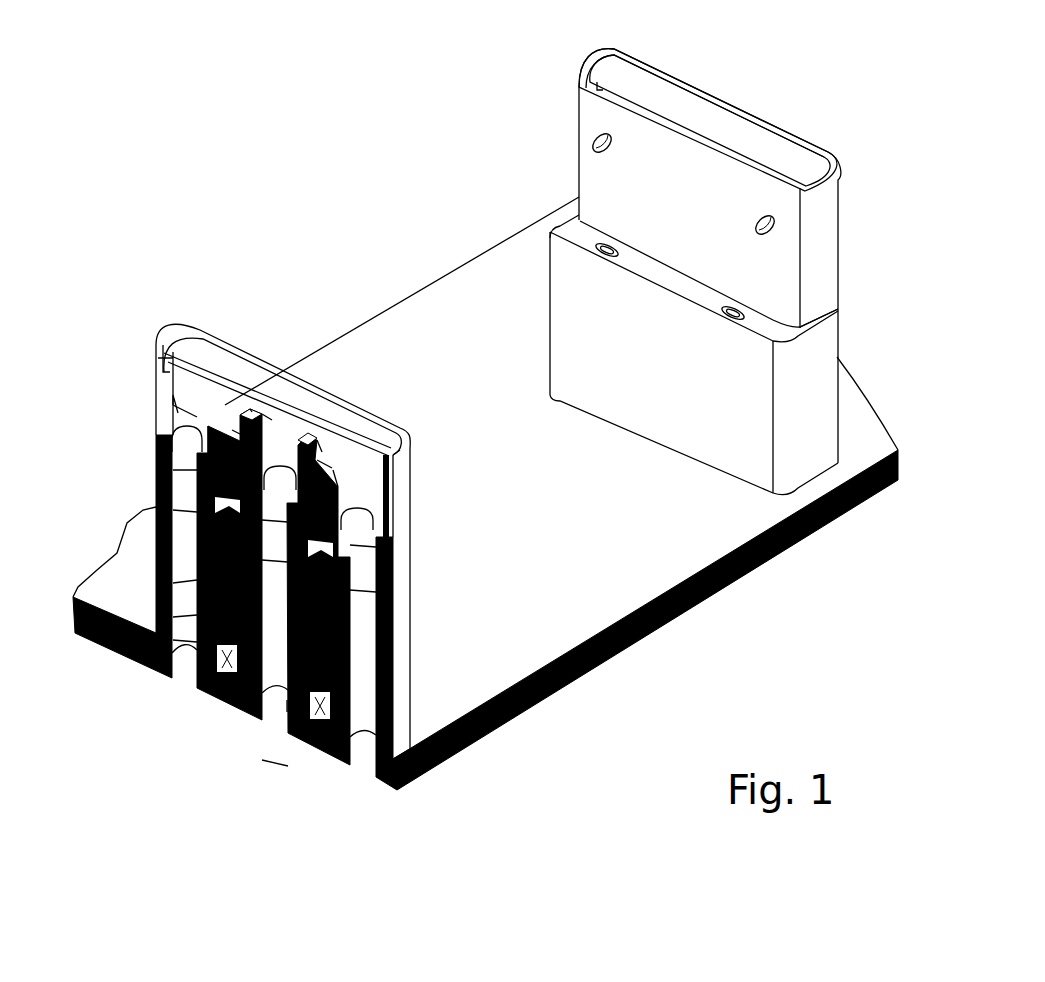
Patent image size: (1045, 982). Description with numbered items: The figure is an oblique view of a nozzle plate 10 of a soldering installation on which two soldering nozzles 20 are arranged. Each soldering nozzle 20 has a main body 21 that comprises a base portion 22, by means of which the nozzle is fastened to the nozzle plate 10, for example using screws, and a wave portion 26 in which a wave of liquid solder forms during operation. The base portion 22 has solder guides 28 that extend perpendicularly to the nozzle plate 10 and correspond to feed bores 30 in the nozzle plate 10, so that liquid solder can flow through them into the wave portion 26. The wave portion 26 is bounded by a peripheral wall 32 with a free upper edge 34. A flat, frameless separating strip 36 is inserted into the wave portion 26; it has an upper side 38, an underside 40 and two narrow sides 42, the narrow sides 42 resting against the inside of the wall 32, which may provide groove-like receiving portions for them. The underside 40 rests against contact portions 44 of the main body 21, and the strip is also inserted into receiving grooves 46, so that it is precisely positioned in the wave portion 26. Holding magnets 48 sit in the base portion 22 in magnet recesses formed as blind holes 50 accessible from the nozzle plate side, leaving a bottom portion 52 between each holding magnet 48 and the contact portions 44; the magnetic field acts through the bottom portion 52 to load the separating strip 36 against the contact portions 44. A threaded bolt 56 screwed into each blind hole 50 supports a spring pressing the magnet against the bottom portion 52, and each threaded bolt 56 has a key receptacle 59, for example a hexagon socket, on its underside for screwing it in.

The nozzle plate 10 is at (556, 618).
The soldering nozzle 20 is at (845, 234).
The main body 21 is at (846, 282).
The base portion 22 is at (826, 343).
The wave portion 26 is at (826, 190).
The solder guide 28 is at (138, 668).
The feed bore 30 is at (178, 660).
The peripheral wall 32 is at (779, 123).
The free upper edge 34 is at (325, 372).
The separating strip 36 is at (708, 104).
The upper side 38 is at (222, 420).
The underside 40 is at (178, 413).
The narrow side 42 is at (165, 345).
The contact portion 44 is at (233, 430).
The receiving groove 46 is at (272, 420).
The holding magnet 48 is at (197, 512).
The blind hole 50 is at (156, 577).
The bottom portion 52 is at (252, 412).
The threaded bolt 56 is at (205, 665).
The key receptacle 59 is at (218, 695).